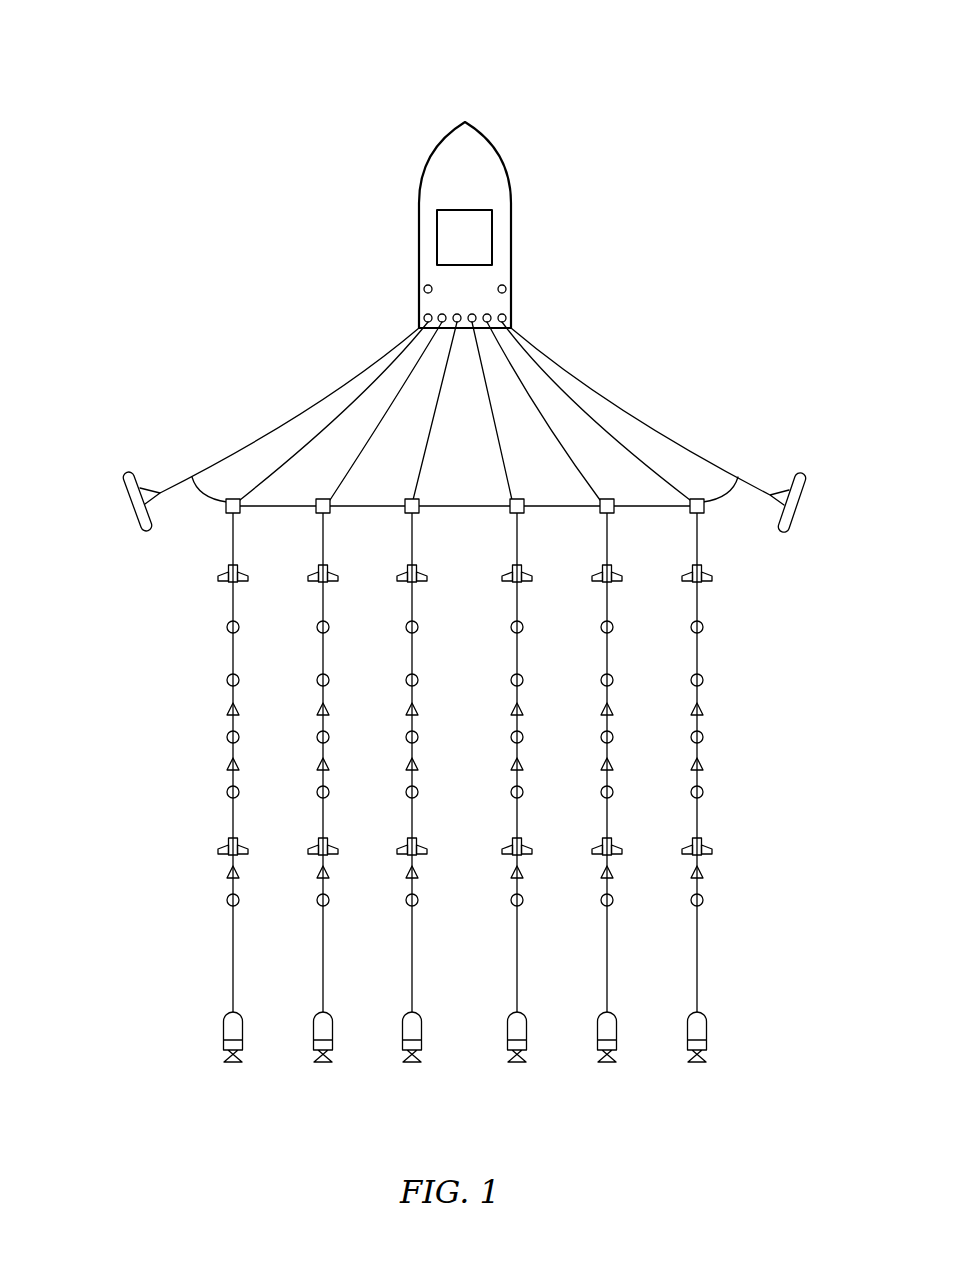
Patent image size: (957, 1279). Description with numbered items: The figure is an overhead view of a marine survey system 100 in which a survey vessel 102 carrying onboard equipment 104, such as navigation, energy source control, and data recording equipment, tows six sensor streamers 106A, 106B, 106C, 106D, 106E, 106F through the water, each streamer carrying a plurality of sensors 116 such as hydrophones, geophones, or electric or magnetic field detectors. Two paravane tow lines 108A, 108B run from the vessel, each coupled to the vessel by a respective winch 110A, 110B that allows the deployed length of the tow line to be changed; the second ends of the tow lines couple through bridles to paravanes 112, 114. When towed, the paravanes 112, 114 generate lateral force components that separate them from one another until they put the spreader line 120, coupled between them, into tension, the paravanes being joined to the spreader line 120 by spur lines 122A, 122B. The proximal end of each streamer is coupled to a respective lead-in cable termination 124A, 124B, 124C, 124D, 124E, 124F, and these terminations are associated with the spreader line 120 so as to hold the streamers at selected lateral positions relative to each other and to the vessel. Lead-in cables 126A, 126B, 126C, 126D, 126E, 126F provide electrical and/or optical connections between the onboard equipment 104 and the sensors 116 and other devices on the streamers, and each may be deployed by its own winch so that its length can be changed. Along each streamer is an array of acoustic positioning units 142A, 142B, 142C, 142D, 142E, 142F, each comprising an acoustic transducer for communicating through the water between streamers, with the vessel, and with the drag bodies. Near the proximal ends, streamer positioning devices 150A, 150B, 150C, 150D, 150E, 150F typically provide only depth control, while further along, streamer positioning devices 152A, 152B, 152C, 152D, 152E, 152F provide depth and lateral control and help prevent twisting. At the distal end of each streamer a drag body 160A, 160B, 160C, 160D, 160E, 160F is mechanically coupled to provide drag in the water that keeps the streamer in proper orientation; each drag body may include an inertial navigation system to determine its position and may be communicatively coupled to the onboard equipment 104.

The marine survey system 100 is at (263, 75).
The survey vessel 102 is at (426, 175).
The onboard equipment 104 is at (493, 228).
The sensor streamer 106A is at (232, 930).
The sensor streamer 106B is at (322, 928).
The sensor streamer 106C is at (411, 928).
The sensor streamer 106D is at (516, 928).
The sensor streamer 106E is at (606, 928).
The sensor streamer 106F is at (699, 928).
The paravane tow line 108A is at (413, 322).
The paravane tow line 108B is at (617, 388).
The winch 110A is at (424, 284).
The winch 110B is at (506, 283).
The paravane 112 is at (141, 530).
The paravane 114 is at (800, 474).
The sensor 116 is at (228, 741).
The spreader line 120 is at (437, 504).
The spur line 122A is at (209, 497).
The spur line 122B is at (717, 495).
The lead-in cable termination 124A is at (238, 513).
The lead-in cable termination 124B is at (328, 513).
The lead-in cable termination 124C is at (417, 513).
The lead-in cable termination 124D is at (522, 513).
The lead-in cable termination 124E is at (612, 513).
The lead-in cable termination 124F is at (704, 511).
The lead-in cable 126A is at (388, 363).
The lead-in cable 126B is at (398, 400).
The lead-in cable 126C is at (427, 443).
The lead-in cable 126D is at (482, 365).
The lead-in cable 126E is at (522, 387).
The lead-in cable 126F is at (607, 432).
The acoustic positioning unit 142A is at (227, 711).
The acoustic positioning unit 142B is at (317, 710).
The acoustic positioning unit 142C is at (406, 710).
The acoustic positioning unit 142D is at (511, 710).
The acoustic positioning unit 142E is at (601, 710).
The acoustic positioning unit 142F is at (691, 710).
The streamer positioning device 150A is at (218, 577).
The streamer positioning device 150B is at (309, 578).
The streamer positioning device 150C is at (398, 578).
The streamer positioning device 150D is at (503, 578).
The streamer positioning device 150E is at (593, 578).
The streamer positioning device 150F is at (683, 578).
The streamer positioning device 152A is at (219, 847).
The streamer positioning device 152B is at (329, 843).
The streamer positioning device 152C is at (418, 843).
The streamer positioning device 152D is at (523, 843).
The streamer positioning device 152E is at (613, 843).
The streamer positioning device 152F is at (703, 843).
The drag body 160A is at (223, 1044).
The drag body 160B is at (313, 1044).
The drag body 160C is at (402, 1044).
The drag body 160D is at (507, 1044).
The drag body 160E is at (597, 1044).
The drag body 160F is at (687, 1044).